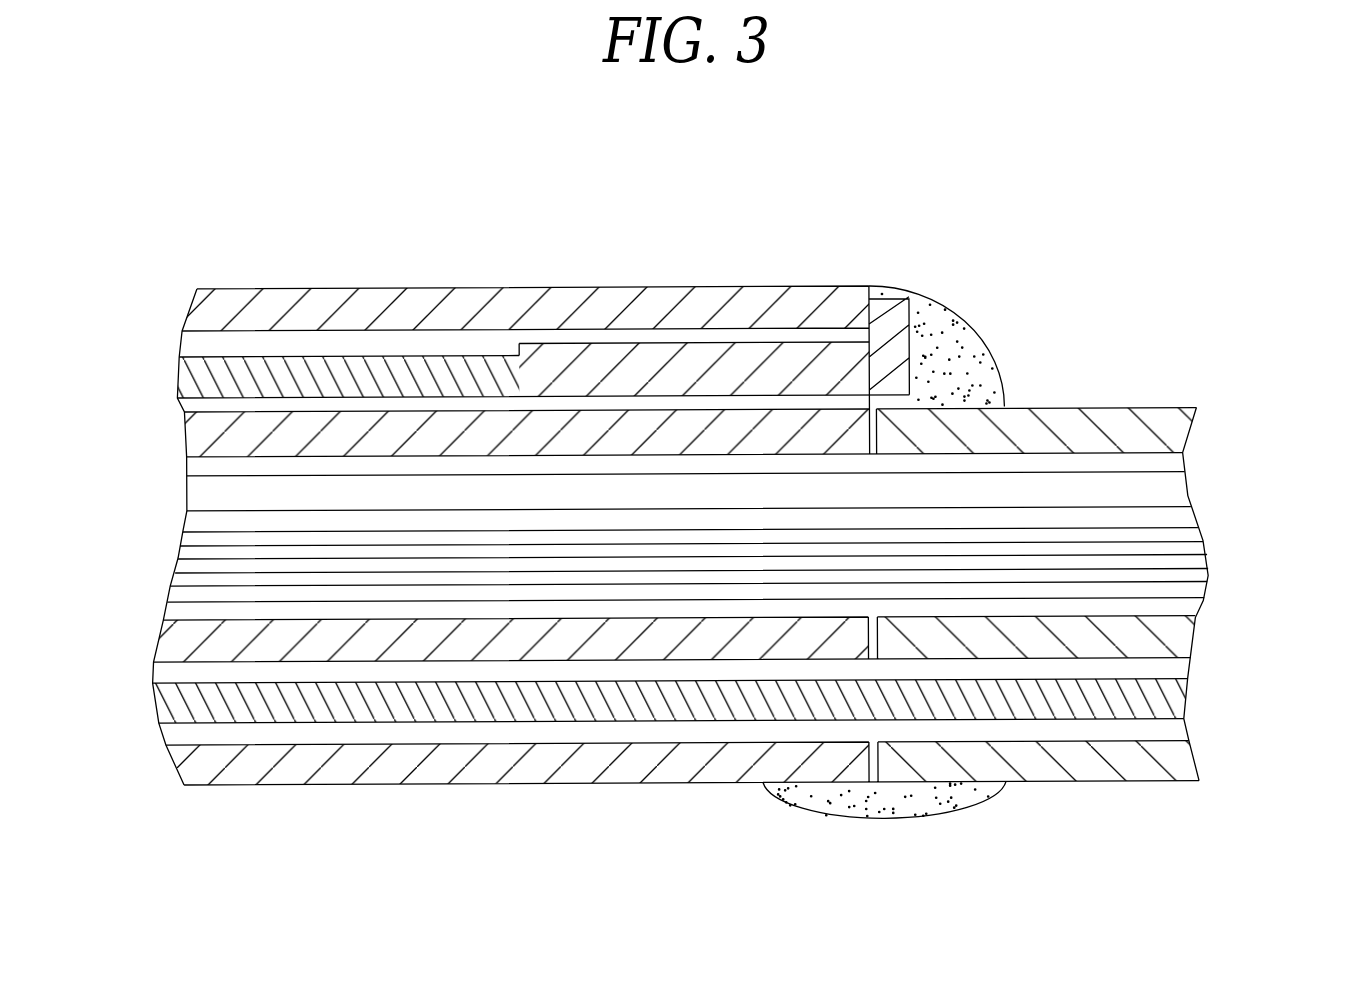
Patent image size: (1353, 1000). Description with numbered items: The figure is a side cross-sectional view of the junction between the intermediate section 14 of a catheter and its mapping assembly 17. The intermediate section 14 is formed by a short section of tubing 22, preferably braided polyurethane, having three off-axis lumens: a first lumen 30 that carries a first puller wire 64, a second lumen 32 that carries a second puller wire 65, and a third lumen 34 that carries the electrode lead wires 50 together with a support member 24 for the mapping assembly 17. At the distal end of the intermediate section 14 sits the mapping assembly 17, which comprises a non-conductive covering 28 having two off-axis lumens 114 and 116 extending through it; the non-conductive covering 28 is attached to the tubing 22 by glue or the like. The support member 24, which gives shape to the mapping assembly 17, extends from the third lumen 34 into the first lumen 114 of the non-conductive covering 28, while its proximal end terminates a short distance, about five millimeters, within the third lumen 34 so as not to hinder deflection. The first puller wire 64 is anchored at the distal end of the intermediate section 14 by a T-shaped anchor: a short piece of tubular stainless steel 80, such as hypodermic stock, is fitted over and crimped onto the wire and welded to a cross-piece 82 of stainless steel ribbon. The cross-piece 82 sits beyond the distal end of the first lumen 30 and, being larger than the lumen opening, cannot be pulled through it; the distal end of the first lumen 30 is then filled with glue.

The intermediate section 14 is at (451, 190).
The mapping assembly 17 is at (1090, 292).
The tubing 22 is at (356, 307).
The support member 24 is at (1040, 470).
The non-conductive covering 28 is at (1071, 768).
The first lumen 30 is at (207, 343).
The second lumen 32 is at (773, 345).
The third lumen 34 is at (203, 468).
The electrode lead wires 50 is at (1168, 582).
The first puller wire 64 is at (278, 375).
The second puller wire 65 is at (517, 725).
The tubular stainless steel 80 is at (655, 365).
The cross-piece 82 is at (887, 317).
The first lumen of the non-conductive covering 114 is at (1160, 462).
The second lumen of the non-conductive covering 116 is at (1167, 730).